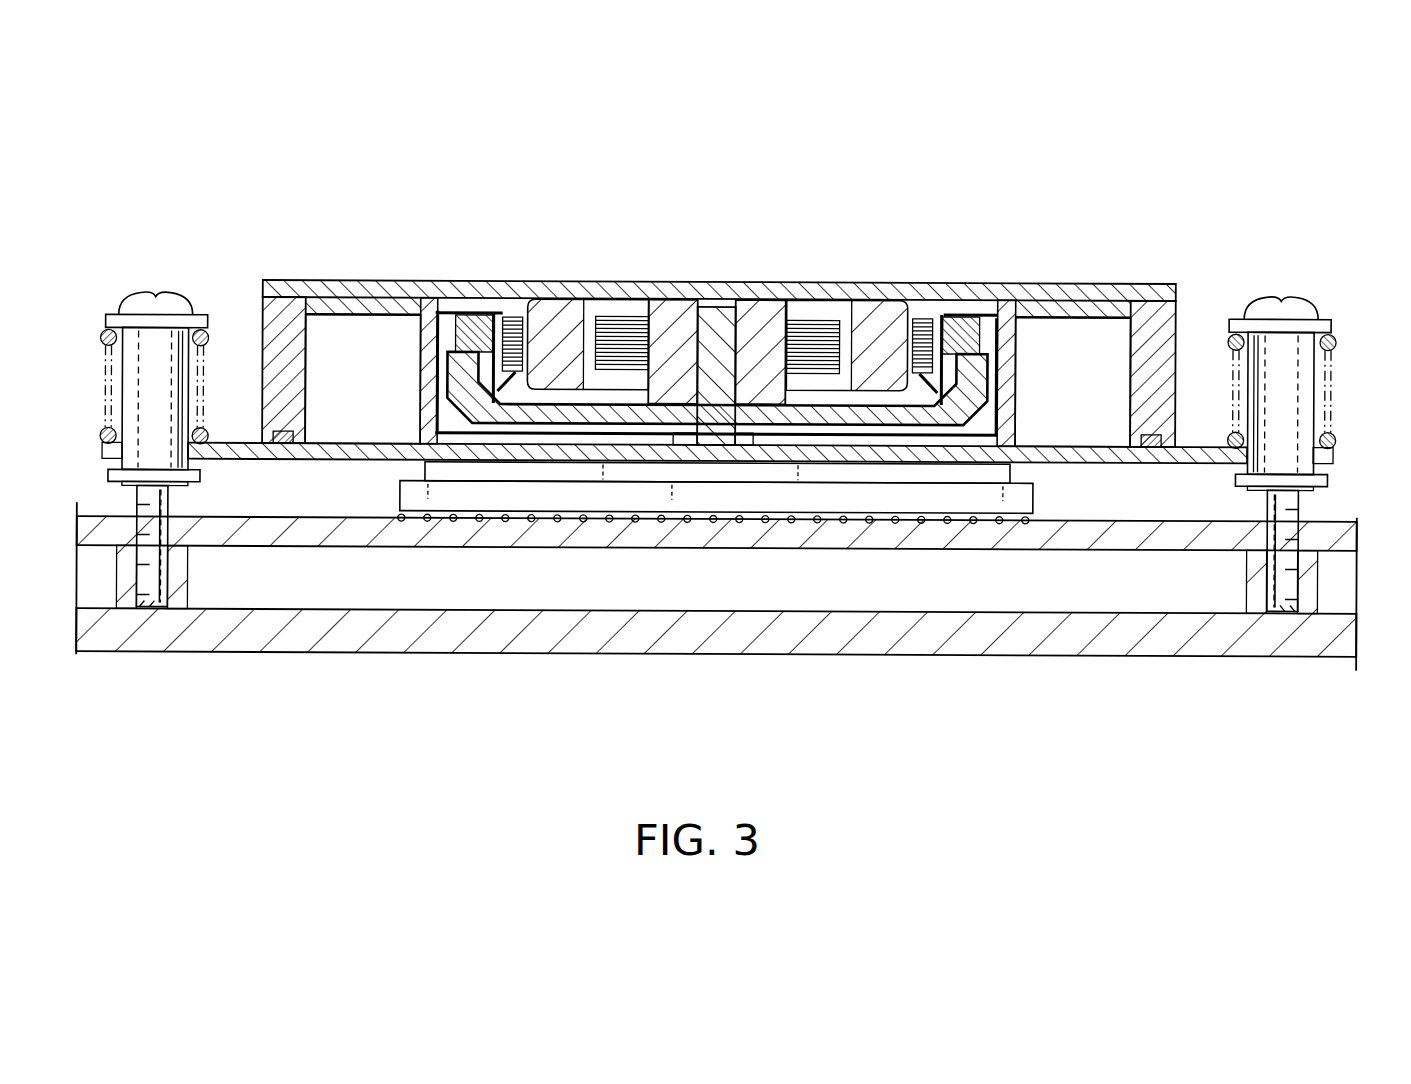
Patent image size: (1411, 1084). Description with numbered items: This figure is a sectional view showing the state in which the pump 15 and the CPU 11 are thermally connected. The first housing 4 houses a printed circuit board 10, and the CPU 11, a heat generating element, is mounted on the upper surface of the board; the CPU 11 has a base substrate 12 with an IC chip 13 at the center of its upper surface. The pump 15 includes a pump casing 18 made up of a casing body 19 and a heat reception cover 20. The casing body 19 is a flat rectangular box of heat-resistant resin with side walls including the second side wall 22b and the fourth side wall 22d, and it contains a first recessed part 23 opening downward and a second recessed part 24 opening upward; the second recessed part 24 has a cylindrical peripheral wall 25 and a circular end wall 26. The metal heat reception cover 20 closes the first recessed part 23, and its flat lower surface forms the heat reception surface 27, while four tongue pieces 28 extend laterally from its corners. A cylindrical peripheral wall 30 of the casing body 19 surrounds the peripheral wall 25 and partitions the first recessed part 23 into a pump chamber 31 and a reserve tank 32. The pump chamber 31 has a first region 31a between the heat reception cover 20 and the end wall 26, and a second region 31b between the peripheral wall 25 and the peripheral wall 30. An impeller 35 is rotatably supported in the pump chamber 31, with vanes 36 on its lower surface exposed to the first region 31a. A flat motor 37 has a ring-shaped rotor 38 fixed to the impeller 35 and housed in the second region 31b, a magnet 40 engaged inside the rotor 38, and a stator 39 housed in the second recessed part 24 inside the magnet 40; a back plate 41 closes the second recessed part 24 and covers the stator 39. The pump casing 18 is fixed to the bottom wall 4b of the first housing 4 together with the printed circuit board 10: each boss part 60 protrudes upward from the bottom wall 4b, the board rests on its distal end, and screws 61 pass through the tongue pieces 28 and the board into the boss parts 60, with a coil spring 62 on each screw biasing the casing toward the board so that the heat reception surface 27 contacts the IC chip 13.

The first housing 4 is at (716, 612).
The bottom wall 4b is at (440, 636).
The printed circuit board 10 is at (305, 532).
The CPU 11 is at (880, 705).
The base substrate 12 is at (890, 492).
The IC chip 13 is at (817, 470).
The pump 15 is at (1157, 268).
The pump casing 18 is at (440, 187).
The casing body 19 is at (355, 298).
The heat reception cover 20 is at (403, 420).
The second side wall 22b is at (1165, 332).
The fourth side wall 22d is at (262, 343).
The first recessed part 23 is at (1118, 333).
The second recessed part 24 is at (540, 325).
The peripheral wall 25 is at (922, 330).
The end wall 26 is at (585, 398).
The heat reception surface 27 is at (712, 450).
The tongue pieces 28 is at (100, 447).
The peripheral wall 30 is at (1015, 390).
The pump chamber 31 is at (1015, 435).
The first region 31a is at (937, 440).
The second region 31b is at (985, 350).
The reserve tank 32 is at (352, 412).
The impeller 35 is at (782, 428).
The vanes 36 is at (515, 418).
The flat motor 37 is at (810, 330).
The rotor 38 is at (468, 330).
The stator 39 is at (640, 320).
The magnet 40 is at (490, 325).
The back plate 41 is at (722, 300).
The boss part 60 is at (190, 578).
The screws 61 is at (148, 297).
The coil spring 62 is at (104, 336).